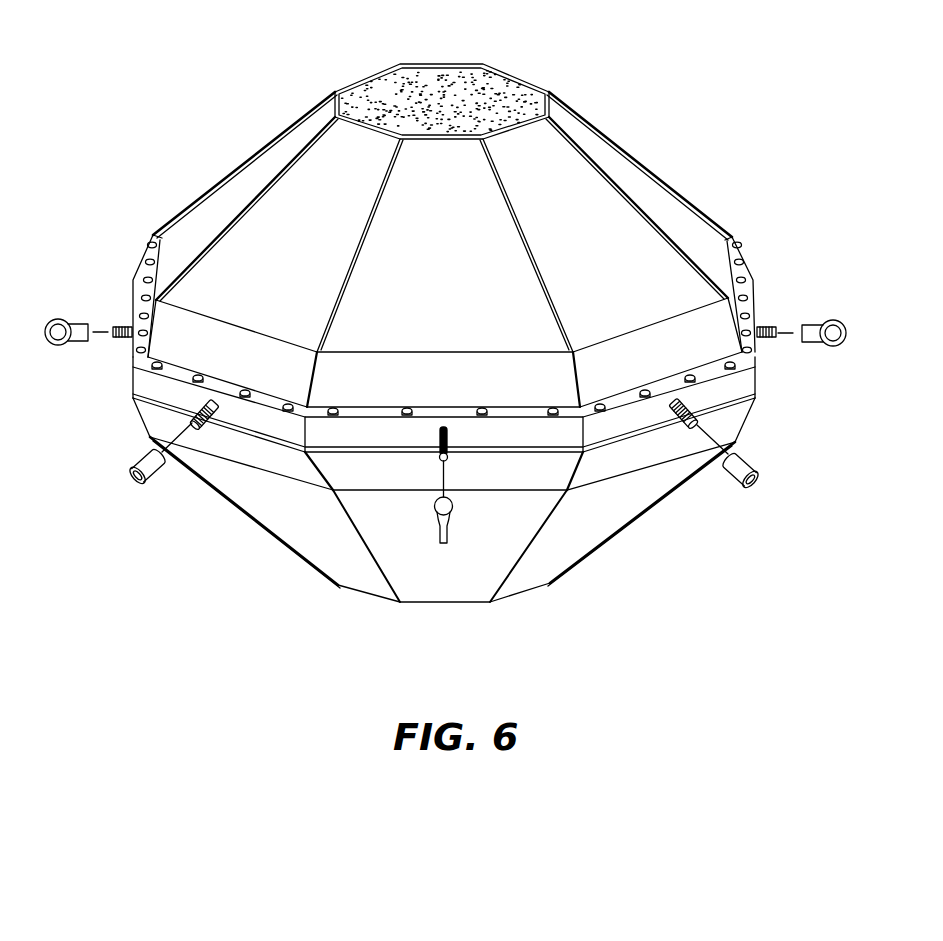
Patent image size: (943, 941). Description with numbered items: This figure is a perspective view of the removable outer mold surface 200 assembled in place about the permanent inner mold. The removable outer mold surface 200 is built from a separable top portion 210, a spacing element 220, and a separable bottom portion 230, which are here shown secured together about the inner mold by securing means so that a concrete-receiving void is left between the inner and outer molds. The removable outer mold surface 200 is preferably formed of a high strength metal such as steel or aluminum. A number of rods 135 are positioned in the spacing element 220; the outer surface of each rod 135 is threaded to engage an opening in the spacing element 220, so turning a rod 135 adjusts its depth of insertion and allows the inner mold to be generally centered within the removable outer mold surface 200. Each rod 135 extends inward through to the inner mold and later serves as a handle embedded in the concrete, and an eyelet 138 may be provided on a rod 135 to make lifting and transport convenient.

The removable outer mold surface 200 is at (196, 83).
The separable top portion 210 is at (243, 184).
The spacing element 220 is at (373, 436).
The separable bottom portion 230 is at (303, 534).
The rod 135 is at (120, 341).
The eyelet 138 is at (55, 321).